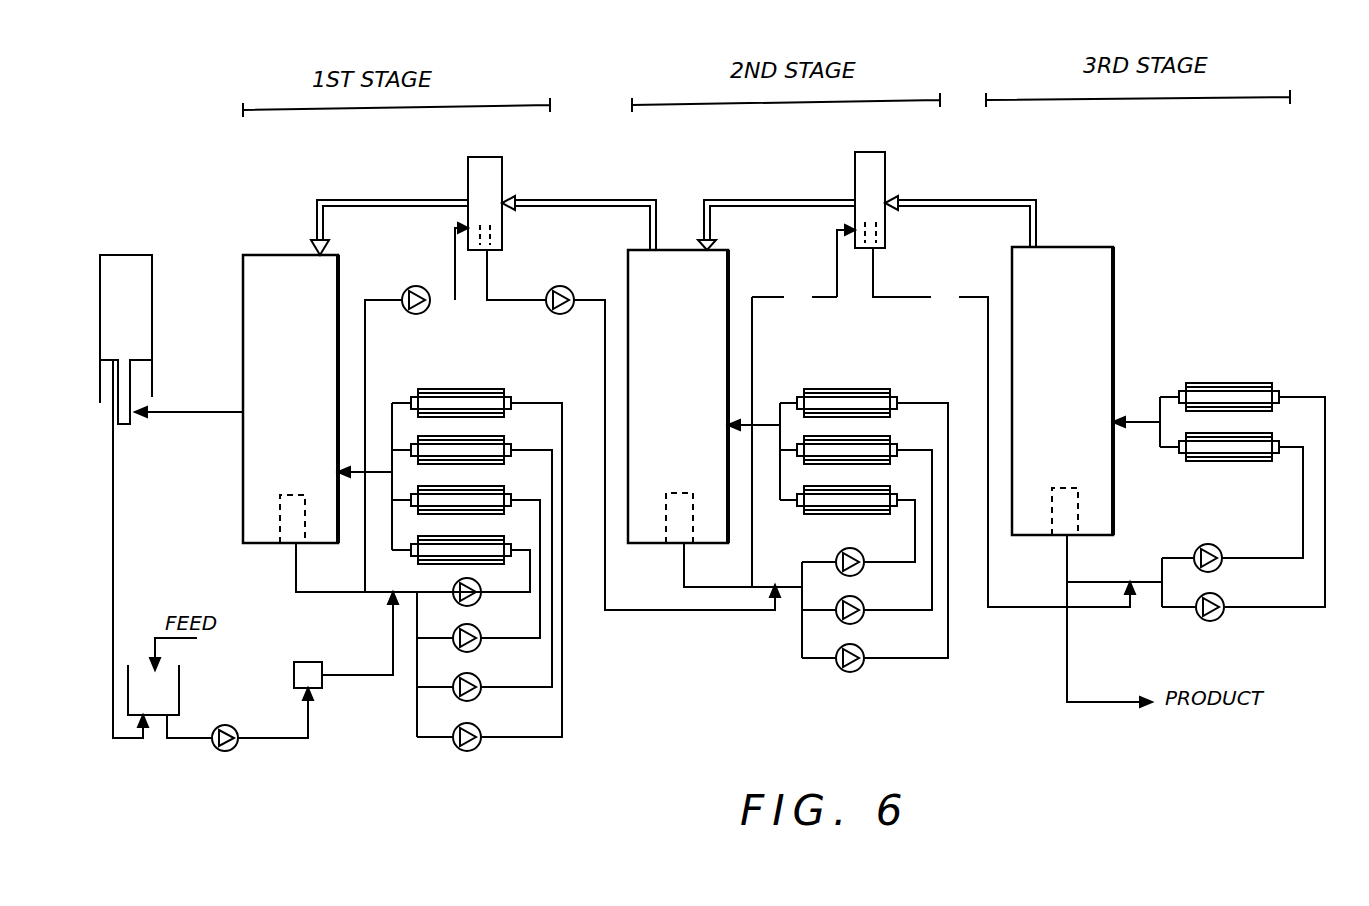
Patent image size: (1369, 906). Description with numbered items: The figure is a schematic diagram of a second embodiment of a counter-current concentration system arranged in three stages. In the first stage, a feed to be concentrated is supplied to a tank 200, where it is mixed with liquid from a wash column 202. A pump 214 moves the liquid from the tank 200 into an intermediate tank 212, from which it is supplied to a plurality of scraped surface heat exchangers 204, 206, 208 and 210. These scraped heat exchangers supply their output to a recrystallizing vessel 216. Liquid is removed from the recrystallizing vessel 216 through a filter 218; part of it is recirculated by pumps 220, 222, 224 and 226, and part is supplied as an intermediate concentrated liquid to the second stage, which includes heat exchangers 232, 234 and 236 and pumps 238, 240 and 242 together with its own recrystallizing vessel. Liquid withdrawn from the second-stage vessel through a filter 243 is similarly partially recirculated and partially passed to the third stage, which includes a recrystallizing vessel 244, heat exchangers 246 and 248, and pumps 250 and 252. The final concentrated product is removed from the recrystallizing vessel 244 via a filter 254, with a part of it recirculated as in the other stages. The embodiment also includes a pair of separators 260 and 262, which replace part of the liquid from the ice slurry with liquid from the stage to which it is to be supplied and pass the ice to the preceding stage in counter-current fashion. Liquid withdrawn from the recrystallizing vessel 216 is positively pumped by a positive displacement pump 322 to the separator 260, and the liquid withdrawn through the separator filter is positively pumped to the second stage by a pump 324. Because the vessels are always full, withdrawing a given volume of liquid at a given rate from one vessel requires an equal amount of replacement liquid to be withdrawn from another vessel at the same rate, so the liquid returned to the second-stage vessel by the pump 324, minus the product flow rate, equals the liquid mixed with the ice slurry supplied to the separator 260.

The tank 200 is at (182, 690).
The wash column 202 is at (150, 258).
The scraped surface heat exchanger 204 is at (500, 384).
The scraped surface heat exchanger 206 is at (488, 442).
The scraped surface heat exchanger 208 is at (480, 494).
The scraped surface heat exchanger 210 is at (476, 543).
The intermediate tank 212 is at (308, 661).
The pump 214 is at (222, 751).
The recrystallizing vessel 216 is at (257, 327).
The filter 218 is at (283, 545).
The pump 220 is at (476, 603).
The pump 222 is at (477, 649).
The pump 224 is at (478, 698).
The pump 226 is at (478, 748).
The heat exchanger 232 is at (860, 395).
The heat exchanger 234 is at (868, 443).
The heat exchanger 236 is at (868, 493).
The pump 238 is at (860, 552).
The pump 240 is at (861, 601).
The pump 242 is at (861, 650).
The filter 243 is at (694, 474).
The recrystallizing vessel 244 is at (1115, 318).
The heat exchanger 246 is at (1244, 373).
The heat exchanger 248 is at (1202, 461).
The pump 250 is at (1232, 536).
The pump 252 is at (1204, 618).
The filter 254 is at (1079, 473).
The separator 260 is at (498, 177).
The separator 262 is at (878, 174).
The positive displacement pump 322 is at (418, 286).
The pump 324 is at (580, 276).